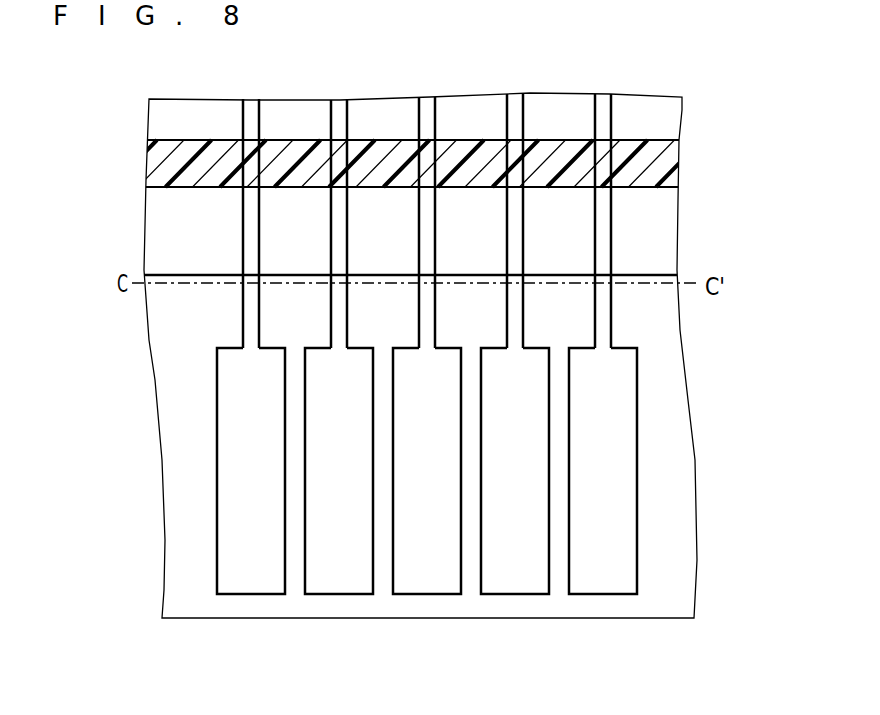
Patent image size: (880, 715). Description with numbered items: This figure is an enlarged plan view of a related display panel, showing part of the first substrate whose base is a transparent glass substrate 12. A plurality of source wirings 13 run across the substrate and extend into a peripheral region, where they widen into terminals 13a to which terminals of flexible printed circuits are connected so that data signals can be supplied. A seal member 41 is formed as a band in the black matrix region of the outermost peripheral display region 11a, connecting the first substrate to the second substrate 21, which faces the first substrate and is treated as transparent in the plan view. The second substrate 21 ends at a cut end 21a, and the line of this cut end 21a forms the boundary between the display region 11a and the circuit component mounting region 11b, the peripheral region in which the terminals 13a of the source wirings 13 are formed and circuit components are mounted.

The glass substrate 12 is at (563, 619).
The seal member 41 is at (665, 165).
The source wirings 13 is at (611, 211).
The display region 11a is at (638, 242).
The second substrate 21 is at (189, 260).
The cut end 21a is at (645, 280).
The circuit component mounting region 11b is at (655, 367).
The terminals 13a is at (637, 423).